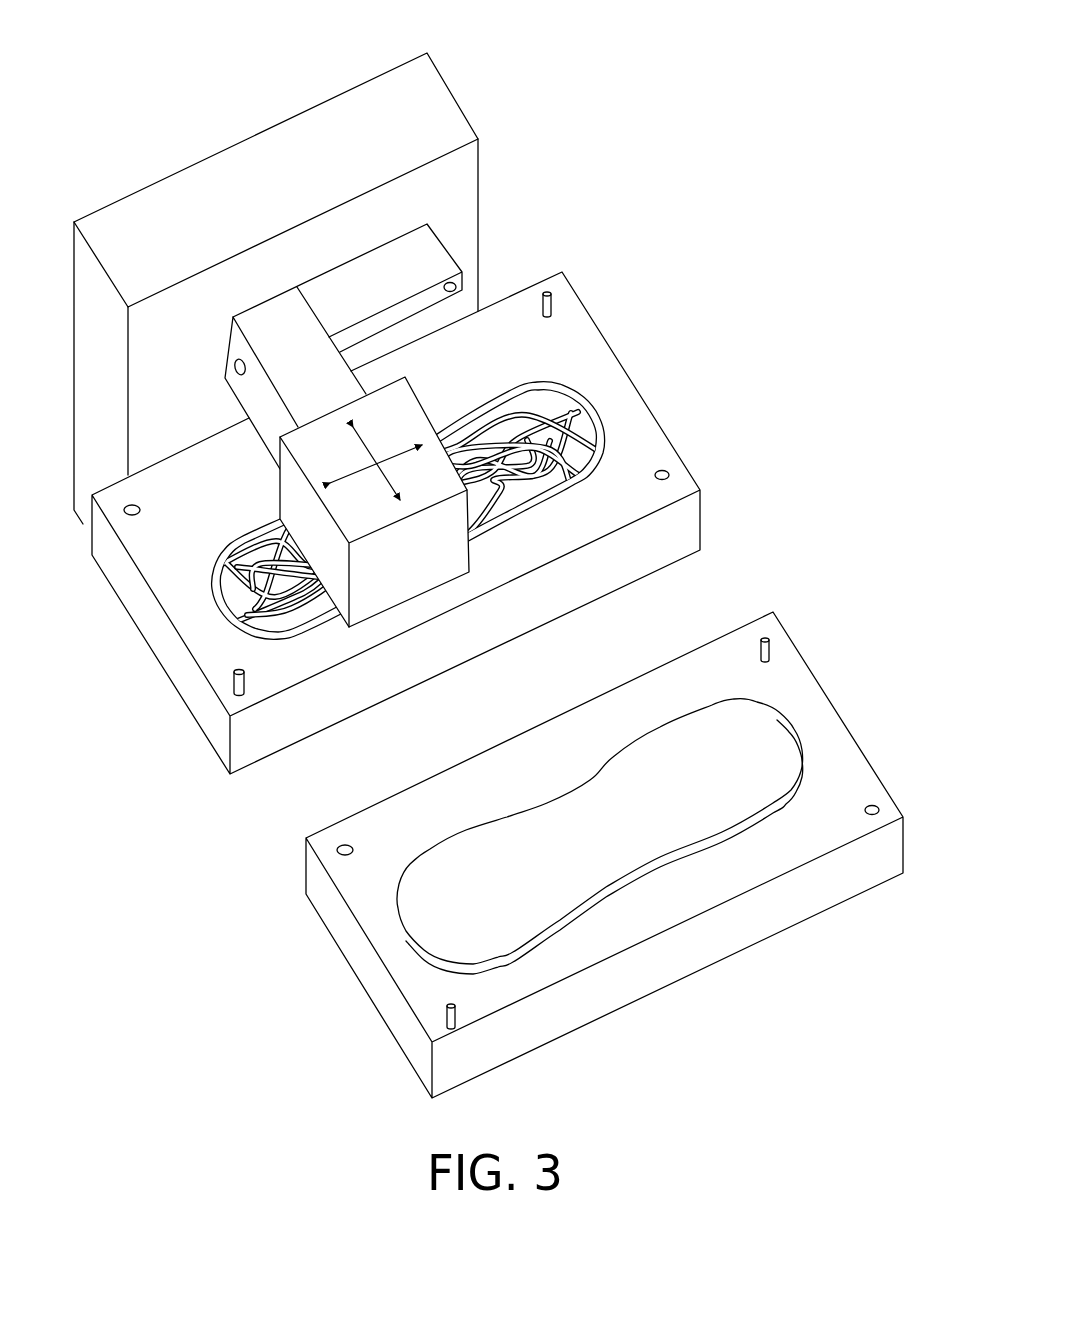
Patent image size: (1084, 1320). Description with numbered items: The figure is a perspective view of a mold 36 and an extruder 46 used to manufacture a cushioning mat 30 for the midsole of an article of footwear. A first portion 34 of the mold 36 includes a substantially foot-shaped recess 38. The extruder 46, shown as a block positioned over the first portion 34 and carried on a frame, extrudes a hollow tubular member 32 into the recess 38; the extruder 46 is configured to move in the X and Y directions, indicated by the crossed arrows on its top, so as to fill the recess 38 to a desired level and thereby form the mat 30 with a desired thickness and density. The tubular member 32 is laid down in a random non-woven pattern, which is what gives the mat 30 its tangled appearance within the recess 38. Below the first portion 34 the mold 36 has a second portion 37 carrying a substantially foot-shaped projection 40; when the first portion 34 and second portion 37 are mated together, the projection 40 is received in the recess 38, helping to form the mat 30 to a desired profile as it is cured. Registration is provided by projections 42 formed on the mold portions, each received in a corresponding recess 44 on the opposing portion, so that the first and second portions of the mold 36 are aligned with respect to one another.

The mat 30 is at (427, 515).
The tubular member 32 is at (553, 397).
The first portion 34 is at (622, 388).
The mold 36 is at (824, 526).
The second portion 37 is at (832, 722).
The recess 38 is at (497, 390).
The projection 40 is at (672, 797).
The projections 42 is at (545, 291).
The recess 44 is at (672, 470).
The extruder 46 is at (295, 500).